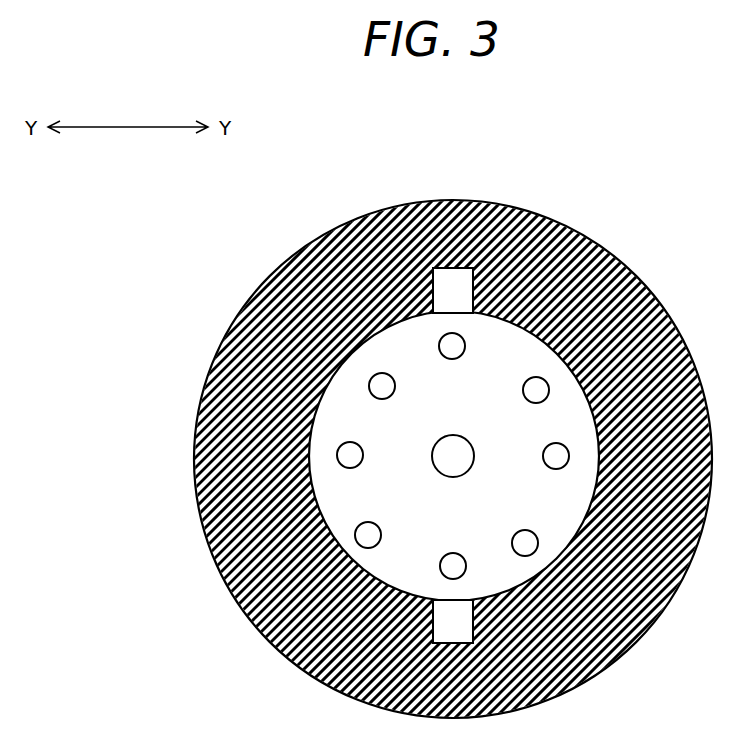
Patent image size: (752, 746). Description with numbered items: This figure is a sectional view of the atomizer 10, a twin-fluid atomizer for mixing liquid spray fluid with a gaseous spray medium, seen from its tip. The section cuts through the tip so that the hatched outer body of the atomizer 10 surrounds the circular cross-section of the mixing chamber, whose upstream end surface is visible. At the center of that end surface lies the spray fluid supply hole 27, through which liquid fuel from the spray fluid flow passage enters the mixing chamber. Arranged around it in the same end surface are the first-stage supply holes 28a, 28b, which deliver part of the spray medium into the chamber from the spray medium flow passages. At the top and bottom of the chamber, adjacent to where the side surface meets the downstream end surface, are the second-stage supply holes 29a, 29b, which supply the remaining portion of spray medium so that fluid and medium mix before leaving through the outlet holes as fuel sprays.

The atomizer 10 is at (240, 327).
The spray fluid supply hole 27 is at (450, 433).
The first-stage supply hole 28a is at (440, 348).
The first-stage supply hole 28b is at (360, 520).
The second-stage supply hole 29a is at (448, 297).
The second-stage supply hole 29b is at (452, 602).